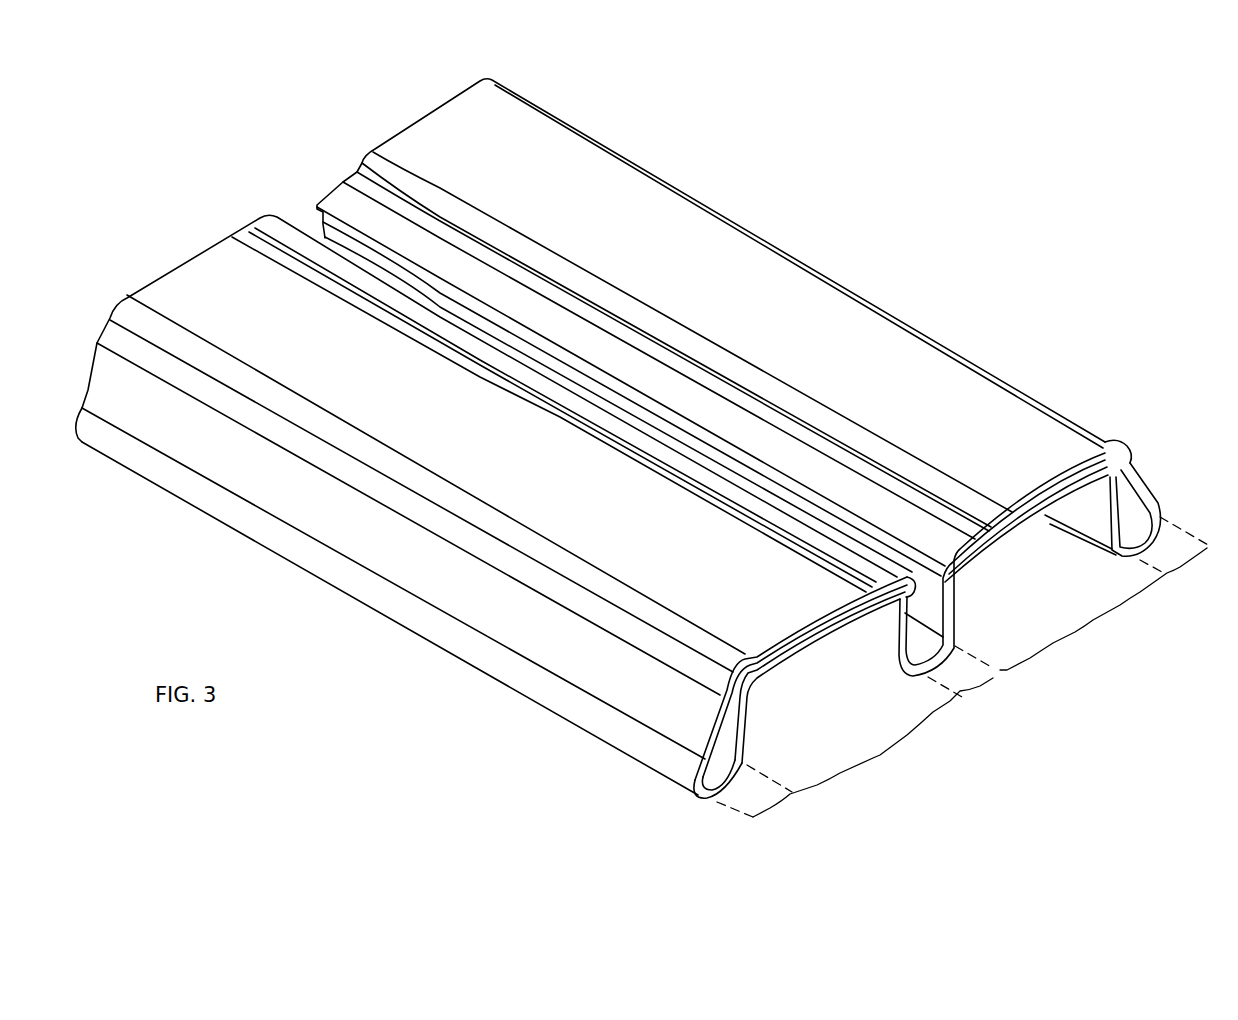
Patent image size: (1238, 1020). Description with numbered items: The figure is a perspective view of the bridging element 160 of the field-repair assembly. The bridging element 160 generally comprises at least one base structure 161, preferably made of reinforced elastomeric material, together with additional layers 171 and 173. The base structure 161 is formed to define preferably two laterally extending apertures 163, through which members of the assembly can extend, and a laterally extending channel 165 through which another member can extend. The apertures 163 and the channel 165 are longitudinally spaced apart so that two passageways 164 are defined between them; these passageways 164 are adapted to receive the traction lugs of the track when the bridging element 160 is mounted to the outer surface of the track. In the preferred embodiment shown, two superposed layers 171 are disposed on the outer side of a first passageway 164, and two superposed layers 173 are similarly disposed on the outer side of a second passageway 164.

The bridging element 160 is at (886, 178).
The base structure 161 is at (418, 628).
The apertures 163 is at (775, 817).
The passageways 164 is at (878, 765).
The channel 165 is at (980, 693).
The layers 171 is at (1137, 457).
The layers 173 is at (725, 673).